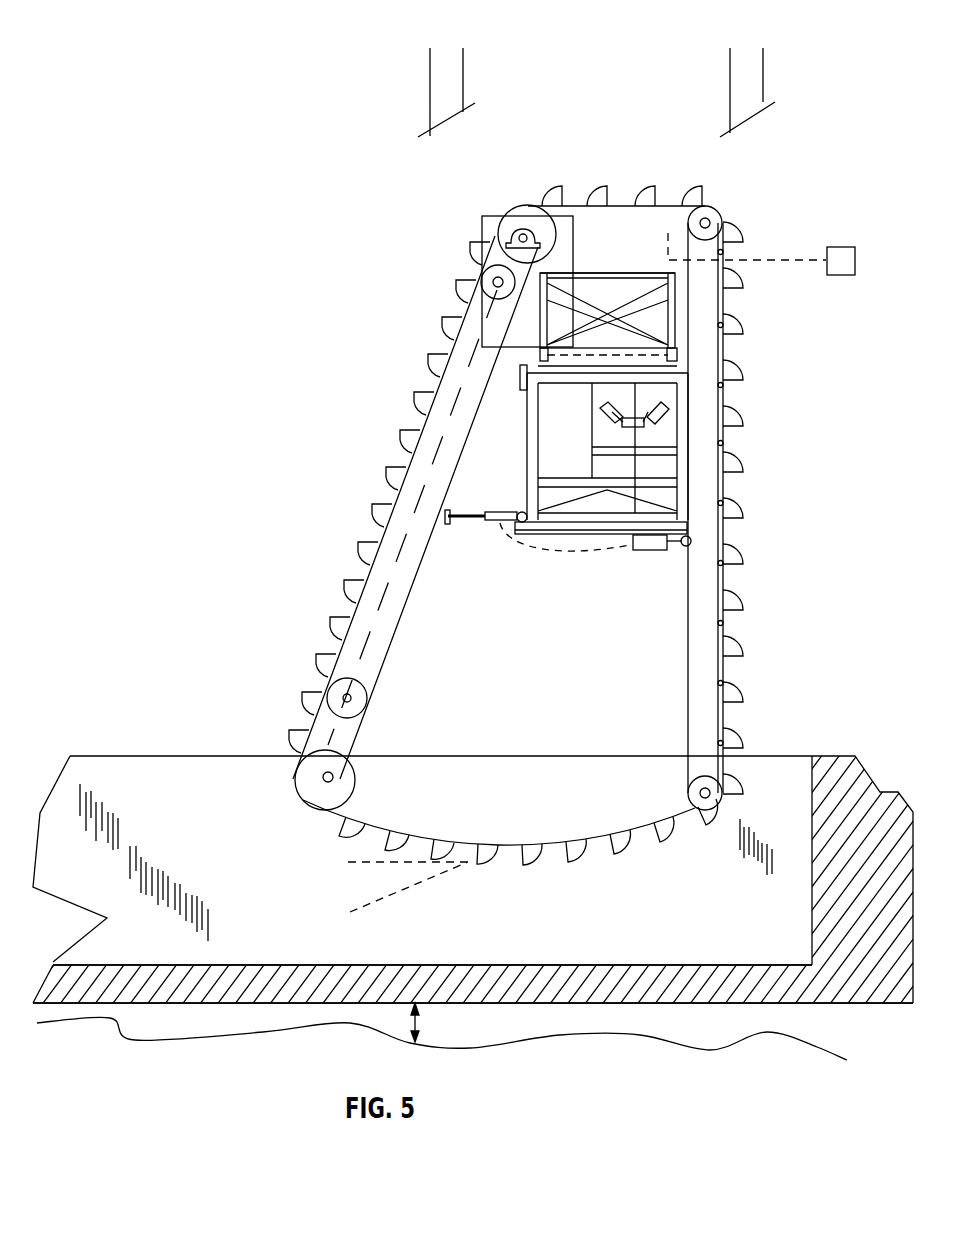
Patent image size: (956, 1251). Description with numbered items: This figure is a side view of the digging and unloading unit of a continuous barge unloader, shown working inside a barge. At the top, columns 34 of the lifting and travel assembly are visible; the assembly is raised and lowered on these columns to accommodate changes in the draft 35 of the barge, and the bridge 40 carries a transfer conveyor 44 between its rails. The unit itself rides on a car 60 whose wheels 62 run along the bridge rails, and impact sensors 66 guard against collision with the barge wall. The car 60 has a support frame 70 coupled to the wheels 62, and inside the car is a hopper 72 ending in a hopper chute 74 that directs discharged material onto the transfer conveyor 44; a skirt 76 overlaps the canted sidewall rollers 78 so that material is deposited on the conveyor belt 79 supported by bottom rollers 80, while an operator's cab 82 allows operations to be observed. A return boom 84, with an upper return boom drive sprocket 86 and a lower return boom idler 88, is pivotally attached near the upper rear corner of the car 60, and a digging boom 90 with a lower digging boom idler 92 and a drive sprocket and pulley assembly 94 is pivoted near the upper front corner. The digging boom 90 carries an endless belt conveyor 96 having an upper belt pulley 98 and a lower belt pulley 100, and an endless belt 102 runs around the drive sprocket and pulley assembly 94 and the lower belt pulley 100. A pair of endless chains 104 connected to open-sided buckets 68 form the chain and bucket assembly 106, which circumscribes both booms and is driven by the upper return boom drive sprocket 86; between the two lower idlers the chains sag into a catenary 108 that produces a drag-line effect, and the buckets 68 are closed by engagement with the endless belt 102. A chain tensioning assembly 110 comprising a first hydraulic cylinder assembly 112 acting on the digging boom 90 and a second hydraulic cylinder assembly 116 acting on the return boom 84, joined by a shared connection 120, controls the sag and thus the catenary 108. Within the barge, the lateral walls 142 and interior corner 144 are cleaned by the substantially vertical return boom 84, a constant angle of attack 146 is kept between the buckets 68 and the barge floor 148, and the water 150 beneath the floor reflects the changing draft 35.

The columns 34 is at (730, 88).
The draft 35 is at (417, 1022).
The bridge 40 is at (556, 463).
The transfer conveyor 44 is at (688, 447).
The car 60 is at (690, 317).
The wheels 62 is at (682, 353).
The impact sensors 66 is at (761, 254).
The open-sided buckets 68 is at (538, 206).
The support frame 70 is at (641, 273).
The hopper 72 is at (636, 273).
The hopper chute 74 is at (613, 366).
The skirt 76 is at (672, 408).
The canted sidewall rollers 78 is at (600, 406).
The conveyor belt 79 is at (665, 415).
The bottom rollers 80 is at (667, 428).
The operator's cab 82 is at (537, 203).
The return boom 84 is at (712, 575).
The upper return boom drive sprocket 86 is at (722, 222).
The lower return boom idler 88 is at (715, 780).
The digging boom 90 is at (430, 610).
The lower digging boom idler 92 is at (296, 774).
The drive sprocket and pulley assembly 94 is at (527, 209).
The endless belt conveyor 96 is at (440, 347).
The upper belt pulley 98 is at (482, 268).
The lower belt pulley 100 is at (328, 698).
The endless belt 102 is at (340, 597).
The endless chains 104 is at (552, 848).
The chain and bucket assembly 106 is at (594, 185).
The catenary 108 is at (510, 805).
The chain tensioning assembly 110 is at (560, 624).
The first hydraulic cylinder assembly 112 is at (492, 525).
The second hydraulic cylinder assembly 116 is at (663, 552).
The connection 120 is at (583, 557).
The lateral walls 142 is at (812, 875).
The interior corner 144 is at (810, 965).
The angle of attack 146 is at (372, 884).
The barge floor 148 is at (532, 964).
The water 150 is at (237, 1013).